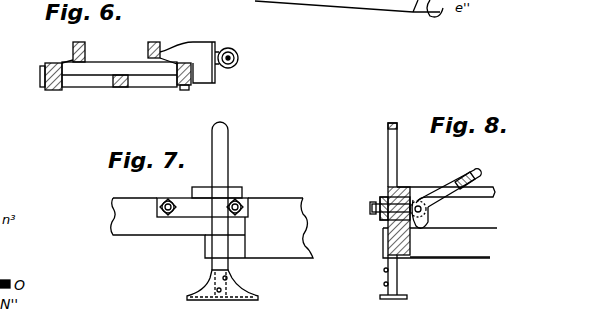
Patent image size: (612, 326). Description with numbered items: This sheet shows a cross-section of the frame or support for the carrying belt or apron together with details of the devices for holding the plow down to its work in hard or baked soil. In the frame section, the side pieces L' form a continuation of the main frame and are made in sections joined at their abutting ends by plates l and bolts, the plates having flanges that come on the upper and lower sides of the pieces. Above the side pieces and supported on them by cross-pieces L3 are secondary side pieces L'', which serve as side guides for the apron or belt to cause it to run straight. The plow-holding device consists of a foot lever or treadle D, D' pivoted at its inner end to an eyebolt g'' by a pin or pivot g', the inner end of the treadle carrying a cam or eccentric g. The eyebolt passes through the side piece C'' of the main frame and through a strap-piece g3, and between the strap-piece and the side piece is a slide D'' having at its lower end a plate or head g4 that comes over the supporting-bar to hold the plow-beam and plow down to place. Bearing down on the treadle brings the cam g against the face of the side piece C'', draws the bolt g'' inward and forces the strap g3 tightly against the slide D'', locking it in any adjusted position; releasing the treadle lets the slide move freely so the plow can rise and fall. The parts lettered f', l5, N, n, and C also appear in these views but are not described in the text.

In FIG. 6, the frame part f' is at (154, 13).
In FIG. 6, the cross-pieces L3 is at (119, 72).
In FIG. 6, the secondary side pieces L'' is at (119, 45).
In FIG. 6, the side pieces L' is at (115, 92).
In FIG. 6, the plates l is at (196, 95).
In FIG. 6, the cylinder body l5 is at (200, 44).
In FIG. 6, the pivot N is at (238, 58).
In FIG. 6, the pivot pin n is at (234, 73).
In FIG. 7, the side piece of the main frame C'' is at (212, 239).
In FIG. 8, the side piece of the main frame C'' is at (441, 222).
In FIG. 8, the lower plank C is at (450, 248).
In FIG. 7, the strap-piece g3 is at (202, 207).
In FIG. 8, the strap-piece g3 is at (378, 206).
In FIG. 7, the eyebolt g'' is at (248, 184).
In FIG. 8, the eyebolt g'' is at (388, 185).
In FIG. 7, the slide D'' is at (236, 196).
In FIG. 8, the slide D'' is at (402, 155).
In FIG. 7, the foot lever or treadle D is at (260, 175).
In FIG. 8, the foot lever or treadle D is at (461, 186).
In FIG. 8, the foot-treadle D' is at (449, 185).
In FIG. 8, the pin or pivot g' is at (420, 195).
In FIG. 8, the cam or eccentric g is at (427, 211).
In FIG. 7, the plate or head g4 is at (222, 294).
In FIG. 8, the plate or head g4 is at (395, 286).